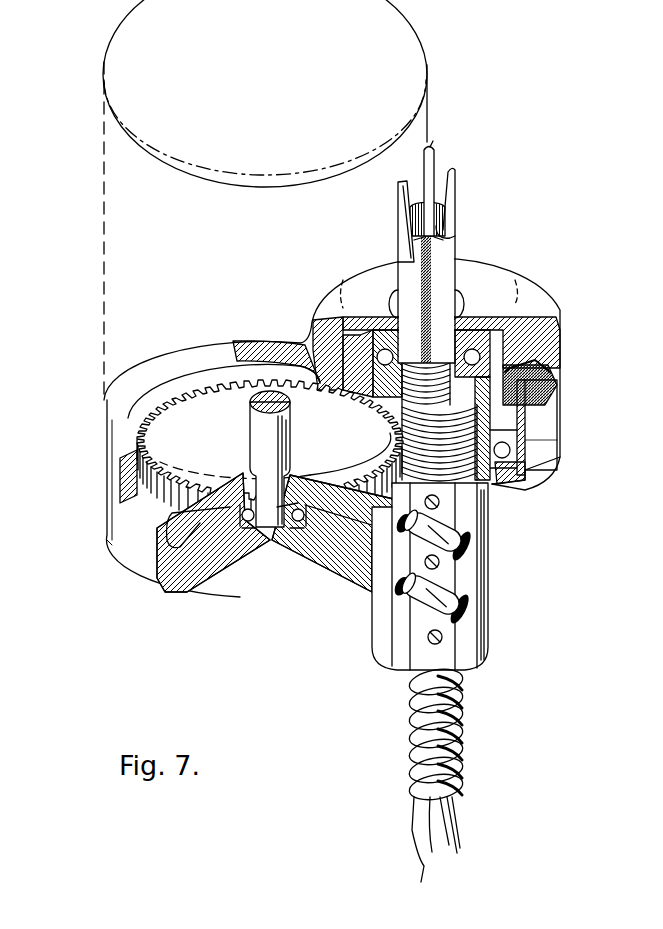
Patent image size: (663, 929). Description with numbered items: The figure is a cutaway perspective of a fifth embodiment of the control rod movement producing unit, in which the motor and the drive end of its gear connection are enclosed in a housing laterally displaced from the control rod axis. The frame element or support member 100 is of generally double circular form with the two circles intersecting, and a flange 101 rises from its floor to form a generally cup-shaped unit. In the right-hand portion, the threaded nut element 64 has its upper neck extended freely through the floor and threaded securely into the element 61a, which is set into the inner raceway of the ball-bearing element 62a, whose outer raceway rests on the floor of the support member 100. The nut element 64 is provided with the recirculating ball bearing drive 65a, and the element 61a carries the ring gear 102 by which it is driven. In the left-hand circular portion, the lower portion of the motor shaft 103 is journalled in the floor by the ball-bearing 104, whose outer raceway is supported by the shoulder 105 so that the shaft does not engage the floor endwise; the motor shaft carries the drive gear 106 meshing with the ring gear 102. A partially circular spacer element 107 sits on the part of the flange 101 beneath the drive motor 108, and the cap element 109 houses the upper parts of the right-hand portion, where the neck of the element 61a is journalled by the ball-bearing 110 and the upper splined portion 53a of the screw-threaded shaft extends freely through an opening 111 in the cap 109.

The upper splined portion of the screw-threaded shaft element 53a is at (443, 243).
The opening 111 is at (458, 297).
The ball-bearing 110 is at (530, 325).
The cap element 109 is at (543, 335).
The ring gear 102 is at (560, 387).
The element 61a is at (527, 410).
The flange 101 is at (150, 539).
The ball-bearing element 62a is at (525, 472).
The frame element or support member 100 is at (338, 581).
The threaded nut element 64 is at (512, 494).
The recirculating ball bearing drive 65a is at (442, 598).
The motor shaft 103 is at (258, 442).
The ball-bearing 104 is at (233, 533).
The shoulder 105 is at (244, 531).
The drive gear 106 is at (205, 551).
The partially circular spacer element 107 is at (122, 487).
The drive motor 108 is at (100, 334).